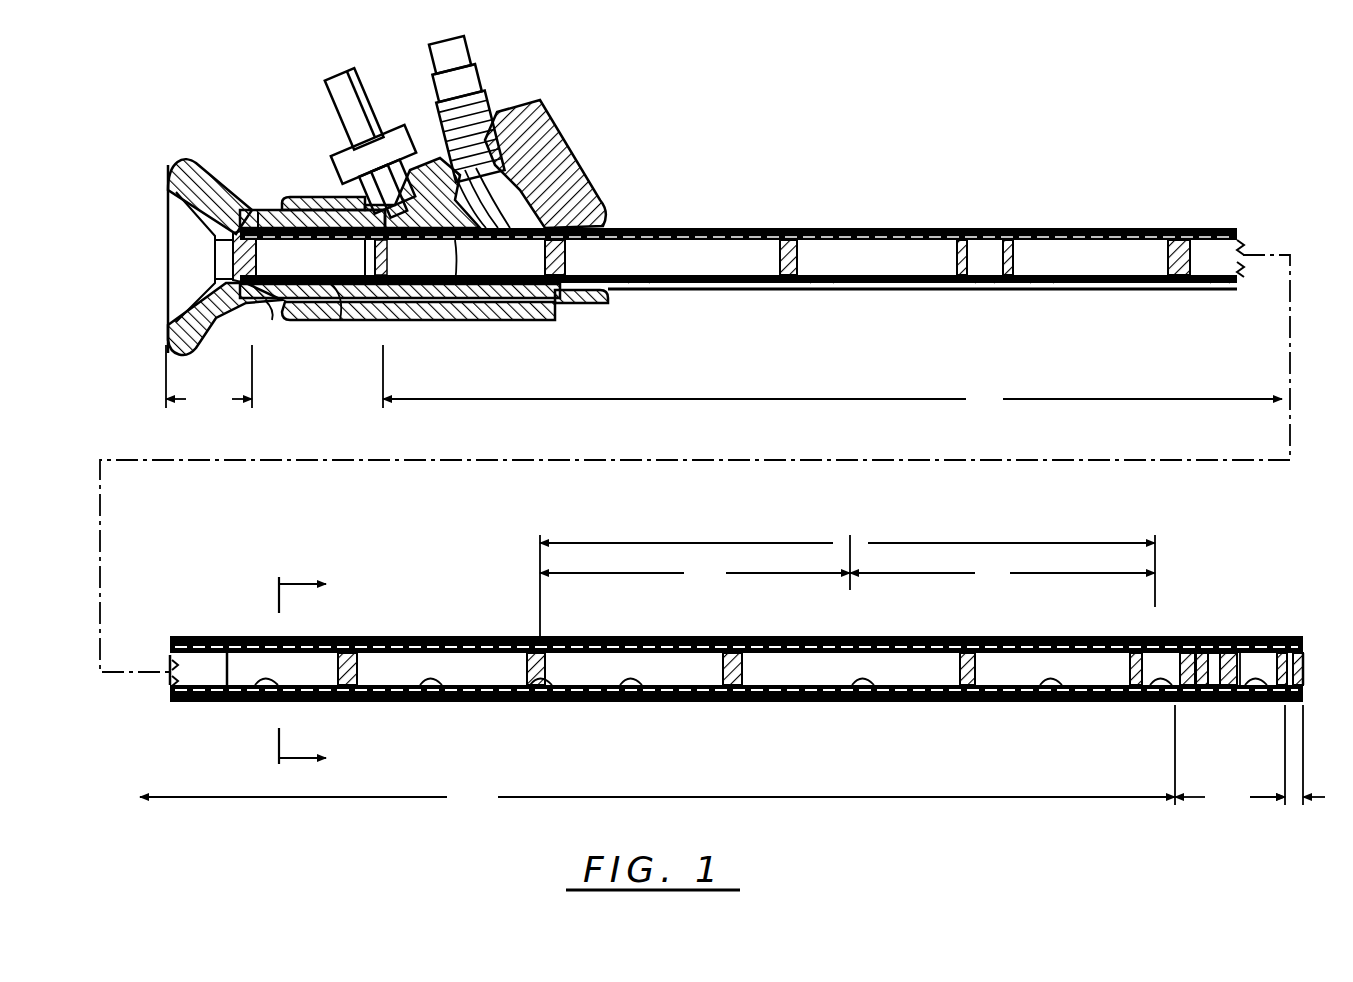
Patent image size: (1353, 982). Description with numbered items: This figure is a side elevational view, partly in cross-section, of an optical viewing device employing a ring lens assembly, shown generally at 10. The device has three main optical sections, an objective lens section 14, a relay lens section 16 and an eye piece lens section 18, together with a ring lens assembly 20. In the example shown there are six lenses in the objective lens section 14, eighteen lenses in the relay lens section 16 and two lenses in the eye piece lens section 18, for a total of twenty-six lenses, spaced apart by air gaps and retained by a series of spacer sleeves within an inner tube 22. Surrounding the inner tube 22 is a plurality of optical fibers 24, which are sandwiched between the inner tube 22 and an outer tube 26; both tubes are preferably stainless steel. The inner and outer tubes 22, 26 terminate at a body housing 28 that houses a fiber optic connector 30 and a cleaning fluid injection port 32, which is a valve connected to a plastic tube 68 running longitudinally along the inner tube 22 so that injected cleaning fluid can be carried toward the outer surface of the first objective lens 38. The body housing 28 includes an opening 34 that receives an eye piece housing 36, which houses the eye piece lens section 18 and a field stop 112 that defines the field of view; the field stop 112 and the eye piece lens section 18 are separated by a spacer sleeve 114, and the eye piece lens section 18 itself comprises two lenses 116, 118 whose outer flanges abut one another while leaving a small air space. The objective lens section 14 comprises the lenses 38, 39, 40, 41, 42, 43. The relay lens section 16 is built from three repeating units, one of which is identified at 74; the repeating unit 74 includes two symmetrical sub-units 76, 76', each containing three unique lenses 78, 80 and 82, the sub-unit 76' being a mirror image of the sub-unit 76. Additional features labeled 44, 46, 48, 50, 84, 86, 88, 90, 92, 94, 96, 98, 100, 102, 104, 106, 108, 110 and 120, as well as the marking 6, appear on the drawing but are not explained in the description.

The optical viewing device employing ring lens assembly 10 is at (686, 144).
The objective lens section 14 is at (1230, 757).
The relay lens section 16 is at (711, 577).
The eye piece lens section 18 is at (209, 377).
The ring lens assembly 20 is at (1304, 795).
The inner tube 22 is at (1072, 228).
The optical fibers 24 is at (862, 228).
The outer tube 26 is at (688, 228).
The body housing 28 is at (533, 142).
The fiber optic connector 30 is at (482, 97).
The cleaning fluid injection port 32 is at (324, 112).
The opening 34 is at (270, 316).
The eye piece housing 36 is at (176, 170).
The lens 38 is at (1303, 683).
The lens 39 is at (1282, 653).
The lens 40 is at (1230, 653).
The lens 41 is at (1214, 653).
The lens 42 is at (1202, 653).
The lens 43 is at (1187, 653).
The tip cap 44 is at (1298, 652).
The tip lumen 46 is at (1272, 702).
The tip lumen 48 is at (1240, 702).
The tip opening 50 is at (1304, 662).
The plastic tube 68 is at (455, 300).
The repeating unit 74 is at (847, 584).
The sub-unit 76 is at (1002, 574).
The sub-unit 76' is at (695, 562).
The lens 78 is at (962, 240).
The lens 80 is at (805, 228).
The lens 82 is at (626, 228).
The tube end 84 is at (228, 650).
The side opening 86 is at (1156, 702).
The side opening 88 is at (1052, 702).
The side opening 90 is at (862, 702).
The side opening 92 is at (630, 702).
The side opening 94 is at (540, 702).
The side opening 96 is at (430, 702).
The side opening 98 is at (266, 700).
The side opening 100 is at (1218, 290).
The side opening 102 is at (1040, 290).
The side opening 104 is at (978, 290).
The side opening 106 is at (822, 290).
The side opening 108 is at (642, 290).
The hub passage 110 is at (540, 300).
The field stop 112 is at (340, 320).
The spacer sleeve 114 is at (278, 322).
The lens 116 is at (260, 212).
The lens 118 is at (240, 230).
The hub bore 120 is at (205, 258).
The section line 6- 6 is at (312, 678).